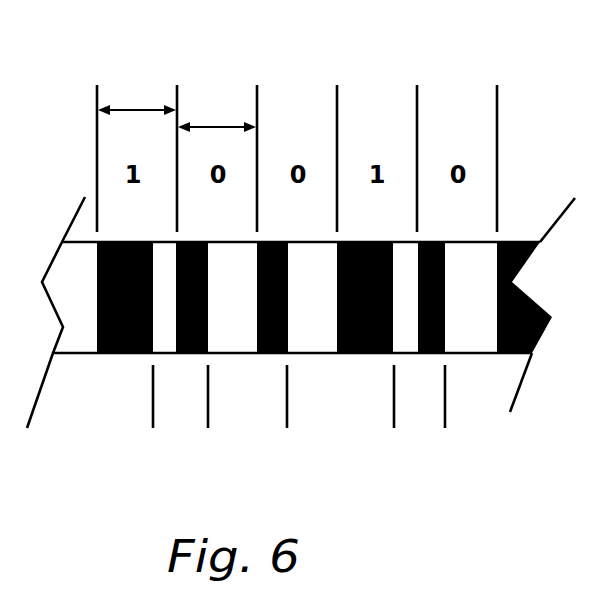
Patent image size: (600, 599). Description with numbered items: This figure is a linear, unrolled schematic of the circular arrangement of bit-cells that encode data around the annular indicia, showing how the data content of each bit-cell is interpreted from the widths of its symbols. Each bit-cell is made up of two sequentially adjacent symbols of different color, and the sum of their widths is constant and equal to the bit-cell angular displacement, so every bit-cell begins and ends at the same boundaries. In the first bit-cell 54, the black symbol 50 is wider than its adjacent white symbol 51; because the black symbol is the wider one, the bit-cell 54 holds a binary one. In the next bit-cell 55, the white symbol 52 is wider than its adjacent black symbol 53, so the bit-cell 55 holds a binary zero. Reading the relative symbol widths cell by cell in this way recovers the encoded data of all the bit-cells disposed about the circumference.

The black symbol 50 is at (108, 353).
The white symbol 51 is at (165, 353).
The white symbol 52 is at (240, 353).
The black symbol 53 is at (207, 338).
The bit-cell 54 is at (178, 95).
The bit-cell 55 is at (220, 120).